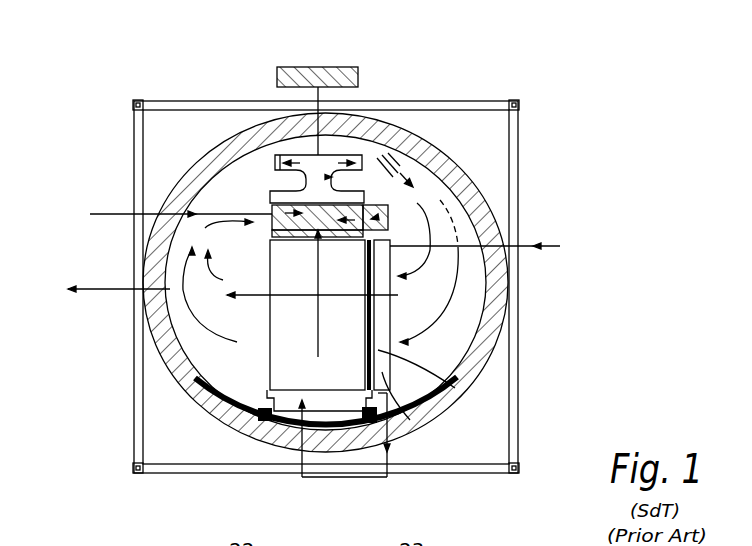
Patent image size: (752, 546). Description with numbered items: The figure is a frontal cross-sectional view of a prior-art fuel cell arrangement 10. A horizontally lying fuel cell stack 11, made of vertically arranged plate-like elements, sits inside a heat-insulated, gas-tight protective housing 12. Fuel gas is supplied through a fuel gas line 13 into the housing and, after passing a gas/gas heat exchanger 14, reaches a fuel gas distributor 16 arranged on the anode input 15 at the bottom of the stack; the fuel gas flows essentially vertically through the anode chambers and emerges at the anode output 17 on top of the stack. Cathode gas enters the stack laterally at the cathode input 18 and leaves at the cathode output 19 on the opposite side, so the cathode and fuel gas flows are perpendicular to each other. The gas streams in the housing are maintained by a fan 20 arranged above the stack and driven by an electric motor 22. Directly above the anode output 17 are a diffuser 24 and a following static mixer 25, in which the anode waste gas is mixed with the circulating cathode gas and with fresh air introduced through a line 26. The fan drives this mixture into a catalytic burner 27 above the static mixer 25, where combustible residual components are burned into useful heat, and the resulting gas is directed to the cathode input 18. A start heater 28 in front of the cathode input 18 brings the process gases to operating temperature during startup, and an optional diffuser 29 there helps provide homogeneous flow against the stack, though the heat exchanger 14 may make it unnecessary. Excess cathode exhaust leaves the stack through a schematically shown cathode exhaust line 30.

The fuel cell arrangement 10 is at (590, 90).
The fuel cell stack 11 is at (297, 312).
The protective housing 12 is at (192, 389).
The fuel gas line 13 is at (523, 244).
The heat exchanger 14 is at (392, 279).
The anode input 15 is at (325, 392).
The fuel gas distributor 16 is at (342, 402).
The anode output 17 is at (302, 244).
The cathode input 18 is at (377, 318).
The cathode output 19 is at (270, 330).
The fan 20 is at (270, 156).
The electric motor 22 is at (303, 68).
The diffuser 24 is at (395, 232).
The static mixer 25 is at (386, 231).
The line 26 is at (90, 214).
The catalytic burner 27 is at (372, 207).
The start heater 28 is at (450, 382).
The diffuser 29 is at (410, 420).
The cathode exhaust line 30 is at (97, 290).